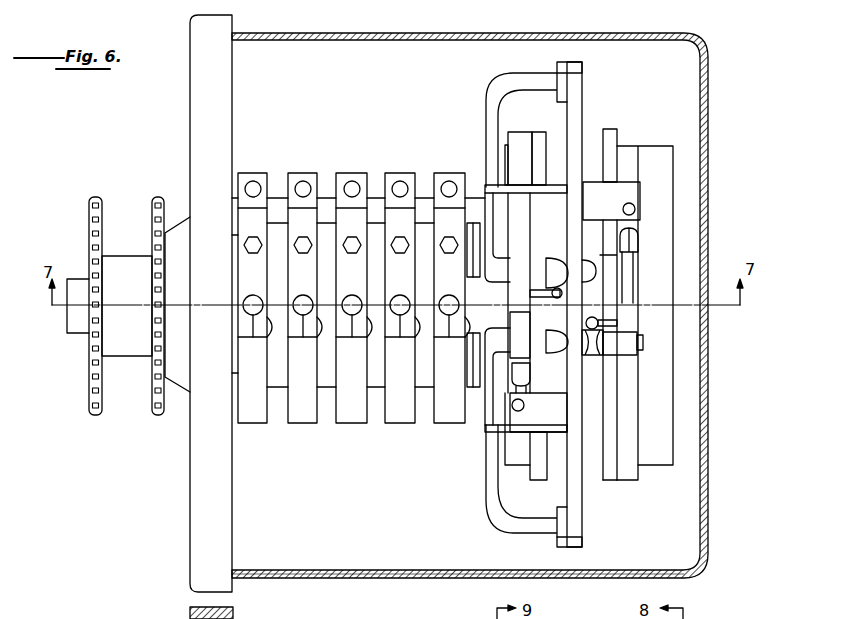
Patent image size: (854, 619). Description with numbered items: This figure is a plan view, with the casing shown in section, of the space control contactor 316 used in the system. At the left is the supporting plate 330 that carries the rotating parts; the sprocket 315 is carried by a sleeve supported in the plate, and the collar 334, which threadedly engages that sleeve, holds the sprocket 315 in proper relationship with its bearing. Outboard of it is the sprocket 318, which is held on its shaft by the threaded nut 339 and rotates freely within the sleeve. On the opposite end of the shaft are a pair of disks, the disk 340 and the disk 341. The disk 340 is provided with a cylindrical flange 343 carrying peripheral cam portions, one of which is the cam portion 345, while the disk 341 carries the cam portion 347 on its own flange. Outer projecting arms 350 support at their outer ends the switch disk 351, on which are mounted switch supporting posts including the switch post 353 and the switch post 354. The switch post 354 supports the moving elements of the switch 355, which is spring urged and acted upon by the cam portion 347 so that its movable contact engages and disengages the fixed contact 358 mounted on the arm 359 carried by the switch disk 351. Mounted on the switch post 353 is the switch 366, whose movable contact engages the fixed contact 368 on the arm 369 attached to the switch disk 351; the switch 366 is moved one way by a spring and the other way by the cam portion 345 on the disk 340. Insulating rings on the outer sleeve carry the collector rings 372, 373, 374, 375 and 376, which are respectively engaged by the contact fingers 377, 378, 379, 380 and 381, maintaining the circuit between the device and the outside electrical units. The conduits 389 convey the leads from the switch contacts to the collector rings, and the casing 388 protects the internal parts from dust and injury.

The space control contactor 316 is at (708, 90).
The sprocket 318 is at (95, 197).
The sprocket 315 is at (156, 197).
The collar 334 is at (128, 258).
The threaded nut 339 is at (78, 325).
The supporting plate 330 is at (190, 484).
The casing 388 is at (313, 579).
The outer projecting arms 350 is at (493, 94).
The cam portion 347 is at (519, 132).
The disk 341 is at (547, 125).
The switch disk 351 is at (579, 107).
The arm 369 is at (619, 184).
The fixed contact 368 is at (636, 209).
The switch 366 is at (630, 263).
The conduits 389 is at (485, 190).
The switch post 354 is at (549, 277).
The switch 355 is at (518, 322).
The switch post 353 is at (598, 352).
The fixed contact 358 is at (524, 405).
The arm 359 is at (557, 426).
The cylindrical flange 343 is at (660, 466).
The cam portion 345 is at (633, 482).
The disk 340 is at (613, 482).
The collector ring 372 is at (450, 420).
The collector ring 373 is at (404, 420).
The collector ring 374 is at (353, 420).
The collector ring 375 is at (310, 420).
The collector ring 376 is at (252, 420).
The contact finger 377 is at (452, 296).
The contact finger 378 is at (403, 296).
The contact finger 379 is at (354, 296).
The contact finger 380 is at (305, 296).
The contact finger 381 is at (256, 296).